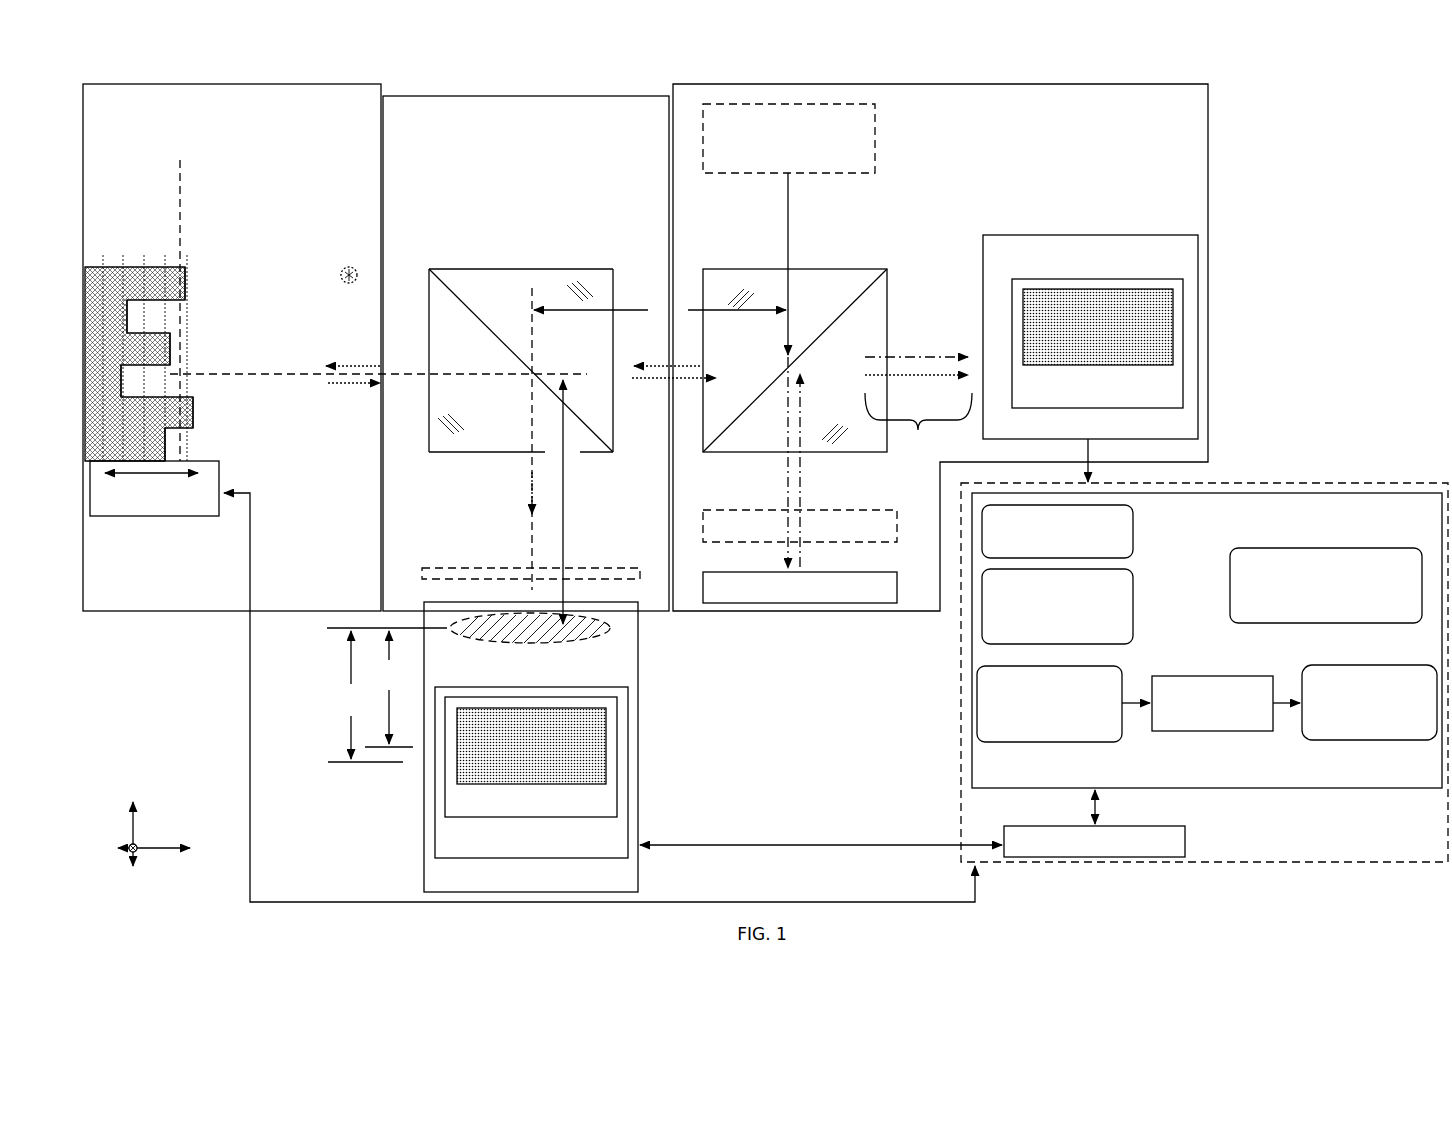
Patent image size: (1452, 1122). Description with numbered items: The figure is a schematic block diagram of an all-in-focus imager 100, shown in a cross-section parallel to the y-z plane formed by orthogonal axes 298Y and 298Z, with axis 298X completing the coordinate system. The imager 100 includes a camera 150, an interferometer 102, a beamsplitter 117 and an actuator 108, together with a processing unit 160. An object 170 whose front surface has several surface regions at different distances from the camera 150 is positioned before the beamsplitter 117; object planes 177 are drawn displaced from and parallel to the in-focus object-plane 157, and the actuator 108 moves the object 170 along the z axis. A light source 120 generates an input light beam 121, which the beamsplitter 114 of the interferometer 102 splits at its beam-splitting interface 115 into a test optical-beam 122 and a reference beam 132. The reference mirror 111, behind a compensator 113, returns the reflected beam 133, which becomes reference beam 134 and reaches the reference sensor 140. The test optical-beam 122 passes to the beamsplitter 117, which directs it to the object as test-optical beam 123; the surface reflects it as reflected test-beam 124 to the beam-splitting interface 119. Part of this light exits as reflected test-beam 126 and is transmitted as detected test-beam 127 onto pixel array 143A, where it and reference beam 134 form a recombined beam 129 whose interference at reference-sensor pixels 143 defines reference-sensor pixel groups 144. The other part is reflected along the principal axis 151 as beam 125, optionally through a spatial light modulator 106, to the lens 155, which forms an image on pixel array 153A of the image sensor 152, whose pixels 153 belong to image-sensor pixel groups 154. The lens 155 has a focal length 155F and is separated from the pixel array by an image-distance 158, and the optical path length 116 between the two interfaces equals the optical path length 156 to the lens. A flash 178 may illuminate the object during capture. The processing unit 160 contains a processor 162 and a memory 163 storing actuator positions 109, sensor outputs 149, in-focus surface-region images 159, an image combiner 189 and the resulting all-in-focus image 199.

The all-in-focus imager 100 is at (1275, 103).
The interferometer 102 is at (940, 347).
The spatial light modulator 106 is at (609, 568).
The actuator 108 is at (532, 681).
The actuator positions 109 is at (1056, 531).
The reference mirror 111 is at (800, 587).
The compensator 113 is at (800, 526).
The beamsplitter 114 is at (847, 332).
The beam-splitting interface 115 is at (852, 312).
The optical path length 116 is at (660, 310).
The beamsplitter 117 is at (524, 358).
The beam-splitting interface 119 is at (483, 331).
The light source 120 is at (789, 138).
The input light beam 121 is at (788, 236).
The test optical-beam 122 is at (693, 364).
The test-optical beam 123 is at (354, 364).
The reflected test-beam 124 is at (354, 387).
The beam 125 is at (522, 491).
The reflected test-beam 126 is at (693, 383).
The detected test-beam 127 is at (950, 378).
The recombined beam 129 is at (918, 430).
The reference beam 132 is at (786, 482).
The reflected beam 133 is at (803, 488).
The reference beam 134 is at (955, 355).
The reference sensor 140 is at (1090, 337).
The reference-sensor pixels 143 is at (1098, 327).
The pixel array 143A is at (1097, 343).
The reference-sensor pixel groups 144 is at (1057, 606).
The sensor outputs 149 is at (1092, 451).
The camera 150 is at (534, 636).
The principal axis 151 is at (531, 416).
The image sensor 152 is at (531, 772).
The pixels 153 is at (531, 746).
The pixel array 153A is at (531, 757).
The image-sensor pixel groups 154 is at (1326, 585).
The lens 155 is at (596, 640).
The focal length 155F is at (389, 689).
The optical path length 156 is at (562, 453).
The in-focus object-plane 157 is at (180, 175).
The image-distance 158 is at (387, 695).
The in-focus surface-region images 159 is at (1063, 704).
The processing unit 160 is at (1044, 672).
The processor 162 is at (912, 823).
The memory 163 is at (1207, 640).
The object 170 is at (206, 377).
The object planes 177 is at (196, 260).
The flash 178 is at (349, 263).
The image combiner 189 is at (1226, 703).
The all-in-focus image 199 is at (1369, 702).
The axis 298X is at (128, 855).
The axis 298Y is at (132, 822).
The axis 298Z is at (165, 852).